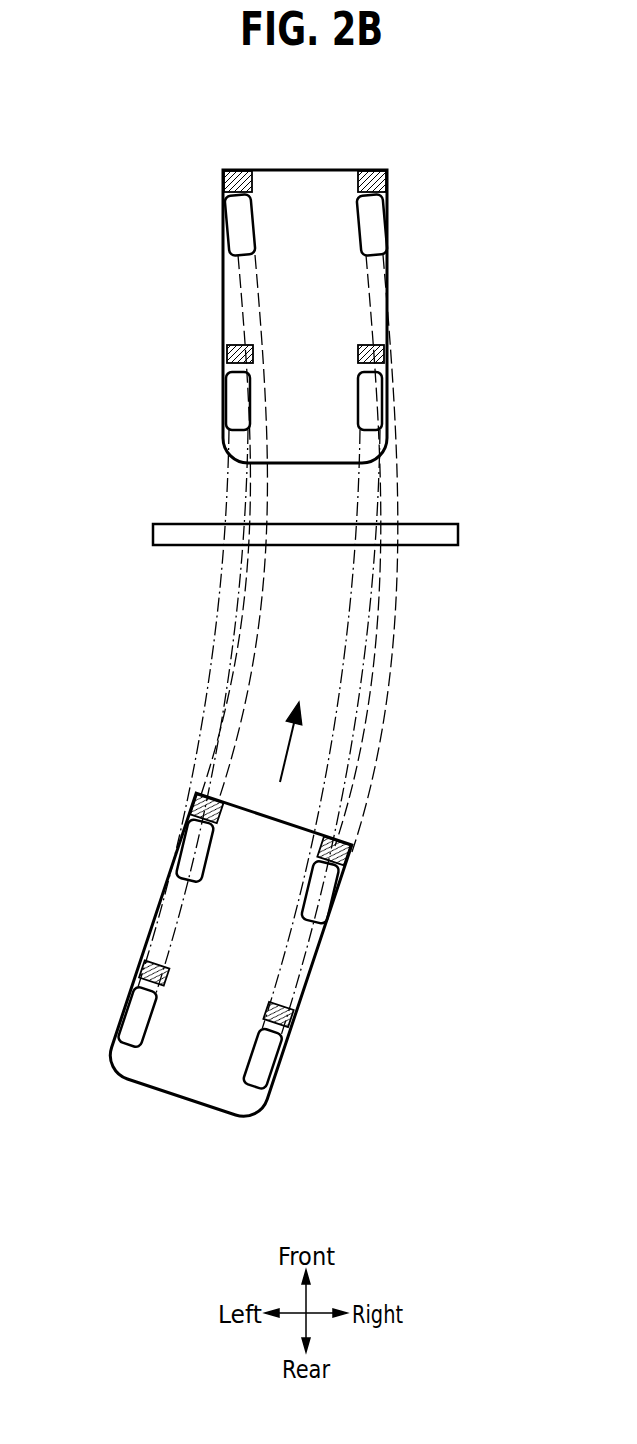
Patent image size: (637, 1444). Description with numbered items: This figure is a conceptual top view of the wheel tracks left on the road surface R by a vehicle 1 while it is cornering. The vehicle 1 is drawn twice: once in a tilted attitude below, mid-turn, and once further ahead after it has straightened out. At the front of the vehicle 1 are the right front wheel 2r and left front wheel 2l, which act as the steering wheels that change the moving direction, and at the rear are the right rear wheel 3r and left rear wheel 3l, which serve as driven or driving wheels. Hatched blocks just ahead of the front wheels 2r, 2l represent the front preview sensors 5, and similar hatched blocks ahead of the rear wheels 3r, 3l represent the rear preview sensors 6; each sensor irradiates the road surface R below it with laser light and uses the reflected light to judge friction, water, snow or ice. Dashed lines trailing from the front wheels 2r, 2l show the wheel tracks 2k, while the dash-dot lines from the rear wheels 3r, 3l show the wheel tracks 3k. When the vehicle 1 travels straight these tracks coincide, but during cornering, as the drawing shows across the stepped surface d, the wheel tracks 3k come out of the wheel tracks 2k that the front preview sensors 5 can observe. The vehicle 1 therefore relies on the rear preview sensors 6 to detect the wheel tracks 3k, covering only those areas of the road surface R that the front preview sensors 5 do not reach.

The vehicle 1 is at (427, 289).
The left front wheel 2l is at (232, 218).
The right front wheel 2r is at (378, 218).
The left rear wheel 3l is at (232, 400).
The right rear wheel 3r is at (378, 400).
The front preview sensor 5 is at (232, 171).
The rear preview sensor 6 is at (233, 356).
The wheel track of front wheels 2k is at (267, 578).
The wheel track of rear wheels 3k is at (213, 663).
The stepped surface d is at (160, 535).
The road surface R is at (449, 658).